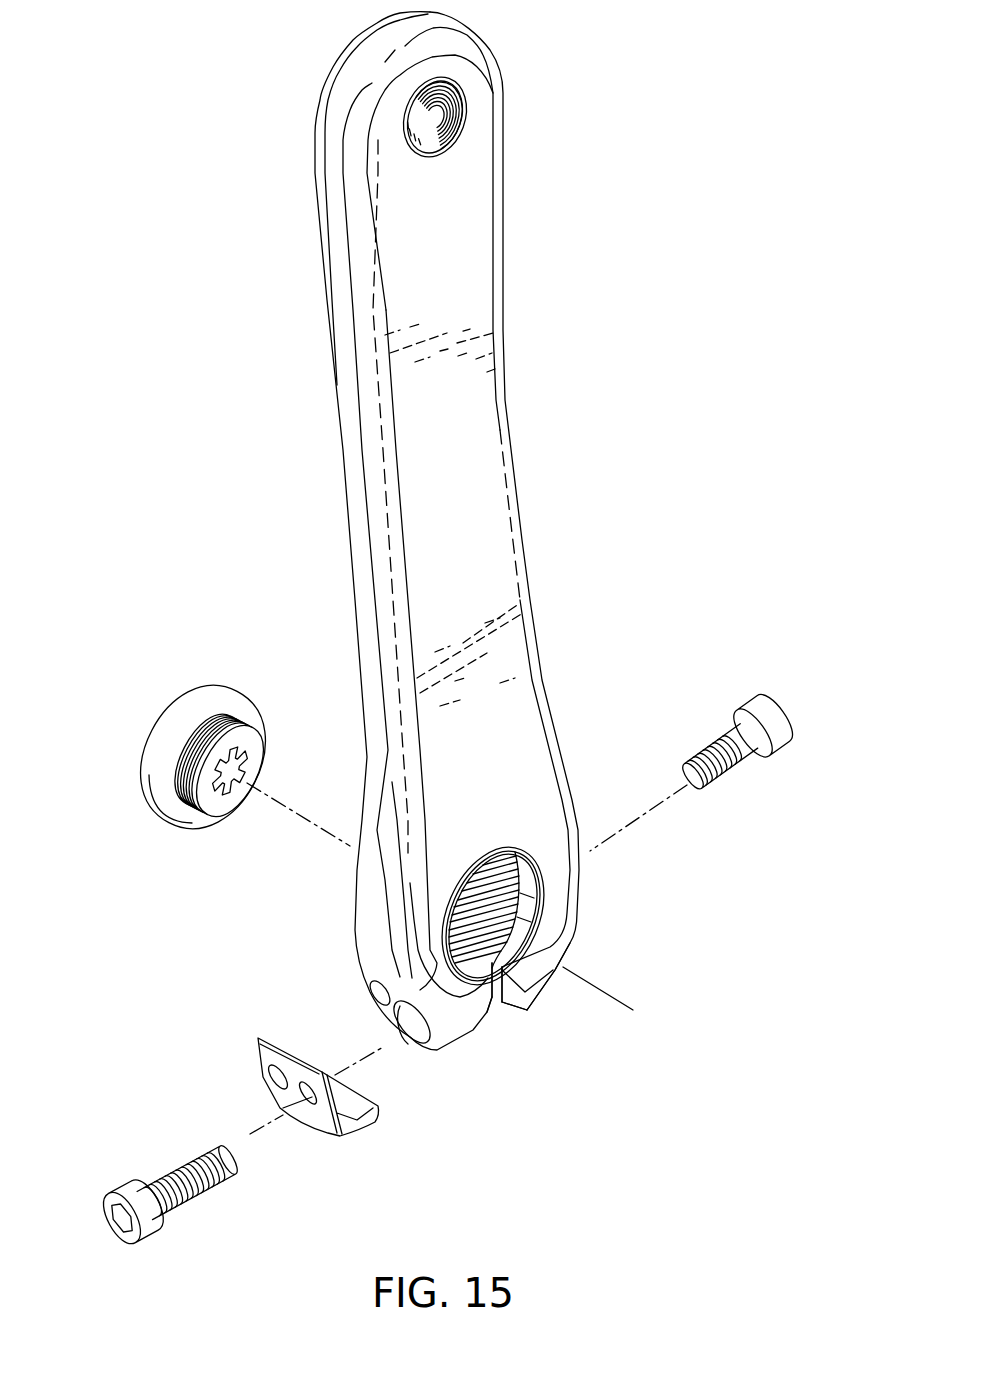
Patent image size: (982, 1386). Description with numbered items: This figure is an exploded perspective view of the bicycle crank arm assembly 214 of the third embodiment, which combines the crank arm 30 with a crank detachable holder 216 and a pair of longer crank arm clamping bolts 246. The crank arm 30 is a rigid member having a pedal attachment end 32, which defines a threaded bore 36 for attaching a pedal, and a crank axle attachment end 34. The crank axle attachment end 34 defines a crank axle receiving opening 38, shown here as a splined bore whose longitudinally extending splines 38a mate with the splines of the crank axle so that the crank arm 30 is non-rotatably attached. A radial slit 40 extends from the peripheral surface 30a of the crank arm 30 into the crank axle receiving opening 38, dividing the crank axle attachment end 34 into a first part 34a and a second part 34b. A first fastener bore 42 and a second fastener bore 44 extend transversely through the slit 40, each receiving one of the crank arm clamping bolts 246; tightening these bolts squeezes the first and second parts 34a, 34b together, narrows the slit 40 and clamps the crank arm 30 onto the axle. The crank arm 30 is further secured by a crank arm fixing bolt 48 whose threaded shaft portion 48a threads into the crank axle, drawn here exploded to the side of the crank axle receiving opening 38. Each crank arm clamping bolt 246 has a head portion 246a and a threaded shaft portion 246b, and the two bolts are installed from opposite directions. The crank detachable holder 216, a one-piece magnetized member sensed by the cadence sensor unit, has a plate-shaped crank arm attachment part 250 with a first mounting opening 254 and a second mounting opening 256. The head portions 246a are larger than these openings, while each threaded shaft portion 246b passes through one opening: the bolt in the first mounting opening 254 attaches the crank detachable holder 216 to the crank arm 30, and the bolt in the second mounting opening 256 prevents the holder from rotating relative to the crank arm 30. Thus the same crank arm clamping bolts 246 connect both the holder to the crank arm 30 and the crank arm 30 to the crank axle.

The crank arm 30 is at (466, 256).
The peripheral surface 30a is at (544, 987).
The pedal attachment end 32 is at (393, 143).
The crank axle attachment end 34 is at (440, 917).
The first part 34a is at (481, 1028).
The second part 34b is at (524, 991).
The threaded bore 36 is at (458, 120).
The crank axle receiving opening 38 is at (510, 937).
The splines 38a is at (526, 912).
The slit 40 is at (500, 1022).
The first fastener bore 42 is at (420, 1034).
The second fastener bore 44 is at (372, 996).
The crank arm fixing bolt 48 is at (200, 692).
The threaded shaft portion 48a is at (180, 775).
The bicycle crank arm assembly 214 is at (594, 478).
The crank detachable holder 216 is at (297, 1144).
The crank arm clamping bolts 246 is at (787, 758).
The head portions 246a is at (770, 717).
The threaded shaft portion 246b is at (722, 778).
The crank arm attachment part 250 is at (268, 1053).
The first mounting opening 254 is at (314, 1070).
The second mounting opening 256 is at (268, 1075).